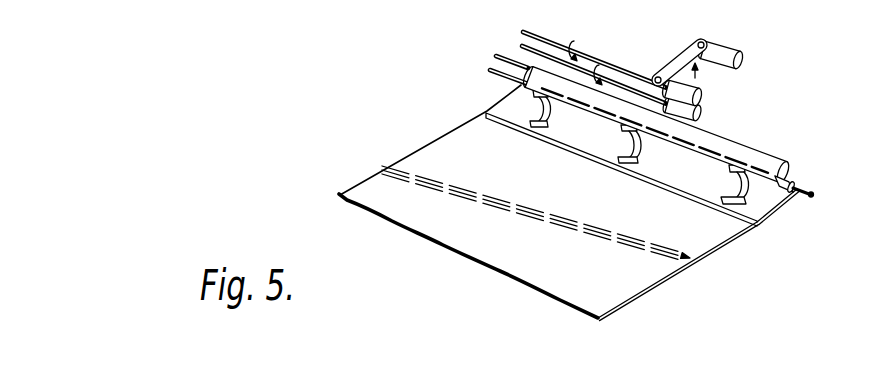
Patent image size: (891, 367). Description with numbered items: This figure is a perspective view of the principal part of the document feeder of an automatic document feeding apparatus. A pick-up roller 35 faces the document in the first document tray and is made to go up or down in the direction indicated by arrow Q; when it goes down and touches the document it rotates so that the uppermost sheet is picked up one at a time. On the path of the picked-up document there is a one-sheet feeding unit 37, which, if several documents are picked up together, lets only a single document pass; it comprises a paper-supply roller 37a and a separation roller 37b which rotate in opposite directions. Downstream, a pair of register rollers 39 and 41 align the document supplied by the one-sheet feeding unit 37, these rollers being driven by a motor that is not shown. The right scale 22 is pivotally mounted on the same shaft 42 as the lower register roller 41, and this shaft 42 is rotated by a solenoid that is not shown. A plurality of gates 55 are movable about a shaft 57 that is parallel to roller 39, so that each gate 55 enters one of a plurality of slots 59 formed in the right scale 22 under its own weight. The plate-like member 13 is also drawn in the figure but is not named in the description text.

The plate / sheet 13 is at (701, 262).
The right scale 22 is at (792, 206).
The pick-up roller 35 is at (725, 44).
The one-sheet feeding unit 37 is at (732, 109).
The paper-supply roller 37a is at (711, 96).
The separation roller 37b is at (704, 119).
The register roller 39 is at (784, 163).
The lower register roller 41 is at (797, 181).
The shaft 42 is at (813, 195).
The gates 55 is at (548, 108).
The shaft 57 is at (490, 72).
The slots 59 is at (529, 131).
The arrow Q is at (681, 34).